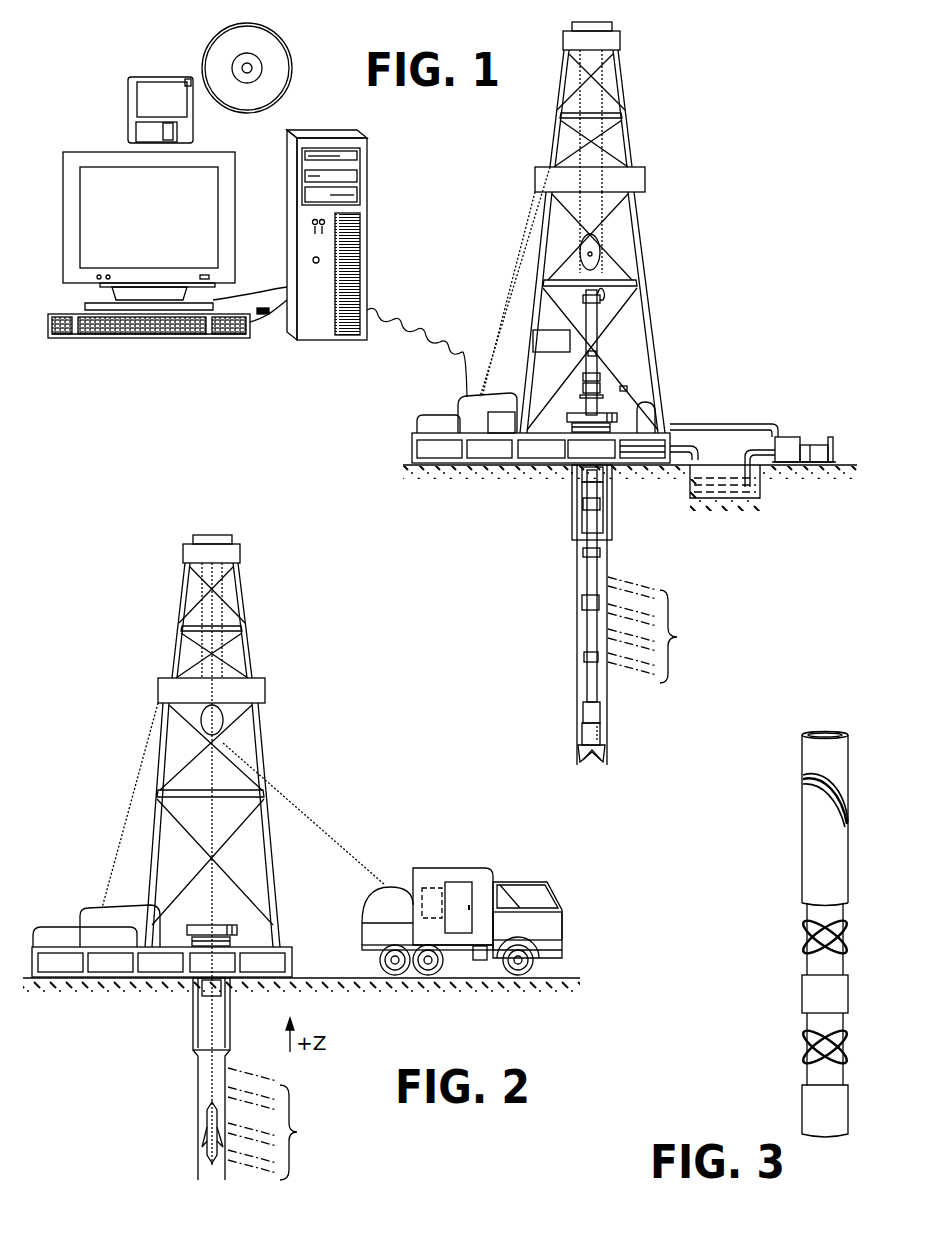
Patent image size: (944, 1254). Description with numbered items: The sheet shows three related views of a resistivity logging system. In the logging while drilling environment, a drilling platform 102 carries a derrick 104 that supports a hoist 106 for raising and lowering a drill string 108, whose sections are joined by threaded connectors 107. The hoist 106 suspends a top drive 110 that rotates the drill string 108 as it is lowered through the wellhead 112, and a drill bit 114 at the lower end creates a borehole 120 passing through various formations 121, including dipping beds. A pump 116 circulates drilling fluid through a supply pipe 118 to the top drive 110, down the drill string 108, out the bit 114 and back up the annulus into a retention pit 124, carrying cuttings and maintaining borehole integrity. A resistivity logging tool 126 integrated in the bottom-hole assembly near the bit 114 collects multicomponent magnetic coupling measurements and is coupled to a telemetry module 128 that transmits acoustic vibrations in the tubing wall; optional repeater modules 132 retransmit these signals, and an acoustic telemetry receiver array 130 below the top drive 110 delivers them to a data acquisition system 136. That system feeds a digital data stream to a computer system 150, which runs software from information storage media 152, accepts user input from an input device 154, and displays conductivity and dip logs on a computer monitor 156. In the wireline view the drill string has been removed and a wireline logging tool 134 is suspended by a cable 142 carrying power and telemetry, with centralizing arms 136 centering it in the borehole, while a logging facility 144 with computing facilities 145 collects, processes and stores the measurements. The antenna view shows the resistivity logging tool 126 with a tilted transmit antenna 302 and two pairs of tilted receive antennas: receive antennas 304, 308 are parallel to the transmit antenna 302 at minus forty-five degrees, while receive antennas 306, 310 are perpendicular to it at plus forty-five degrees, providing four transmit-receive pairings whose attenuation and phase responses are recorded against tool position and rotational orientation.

In FIG. 1, the drilling platform 102 is at (412, 437).
In FIG. 2, the drilling platform 102 is at (291, 956).
In FIG. 1, the derrick 104 is at (628, 138).
In FIG. 2, the derrick 104 is at (278, 912).
In FIG. 1, the hoist 106 is at (600, 250).
In FIG. 2, the hoist 106 is at (222, 718).
In FIG. 1, the threaded connectors 107 is at (583, 550).
In FIG. 1, the drill string 108 is at (597, 583).
In FIG. 1, the top drive 110 is at (591, 317).
In FIG. 1, the wellhead 112 is at (608, 408).
In FIG. 2, the wellhead 112 is at (226, 925).
In FIG. 1, the drill bit 114 is at (600, 753).
In FIG. 1, the pump 116 is at (785, 440).
In FIG. 1, the supply pipe 118 is at (735, 424).
In FIG. 1, the borehole 120 is at (582, 597).
In FIG. 1, the formations 121 is at (662, 630).
In FIG. 2, the formations 121 is at (283, 1124).
In FIG. 1, the retention pit 124 is at (705, 487).
In FIG. 1, the resistivity logging tool 126 is at (582, 731).
In FIG. 3, the resistivity logging tool 126 is at (803, 740).
In FIG. 1, the telemetry module 128 is at (585, 715).
In FIG. 1, the acoustic telemetry receiver array 130 is at (593, 355).
In FIG. 1, the repeater modules 132 is at (583, 612).
In FIG. 2, the wireline logging tool 134 is at (210, 1123).
In FIG. 1, the data acquisition system 136 is at (488, 425).
In FIG. 2, the data acquisition system 136 is at (203, 1143).
In FIG. 2, the cable 142 is at (282, 788).
In FIG. 2, the logging facility 144 is at (425, 868).
In FIG. 2, the computing facilities 145 is at (422, 900).
In FIG. 1, the computer system 150 is at (287, 261).
In FIG. 1, the information storage media 152 is at (203, 67).
In FIG. 1, the input device 154 is at (78, 338).
In FIG. 1, the computer monitor 156 is at (80, 283).
In FIG. 3, the tilted transmit antenna 302 is at (803, 785).
In FIG. 3, the receive antenna 304 is at (806, 925).
In FIG. 3, the receive antenna 306 is at (806, 950).
In FIG. 3, the receive antenna 308 is at (806, 1035).
In FIG. 3, the receive antenna 310 is at (806, 1060).